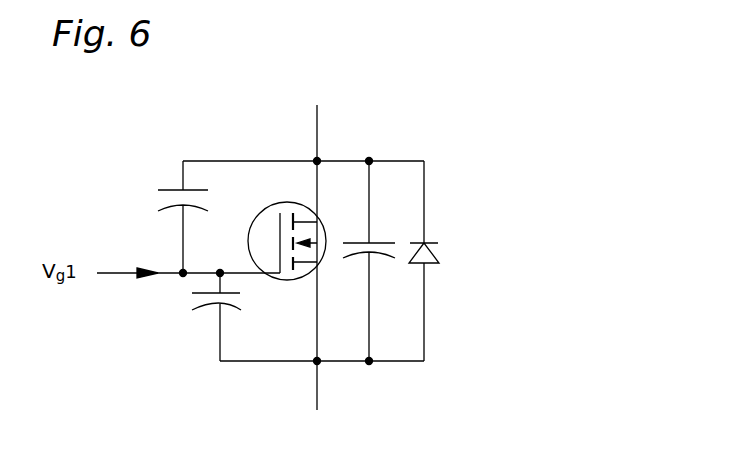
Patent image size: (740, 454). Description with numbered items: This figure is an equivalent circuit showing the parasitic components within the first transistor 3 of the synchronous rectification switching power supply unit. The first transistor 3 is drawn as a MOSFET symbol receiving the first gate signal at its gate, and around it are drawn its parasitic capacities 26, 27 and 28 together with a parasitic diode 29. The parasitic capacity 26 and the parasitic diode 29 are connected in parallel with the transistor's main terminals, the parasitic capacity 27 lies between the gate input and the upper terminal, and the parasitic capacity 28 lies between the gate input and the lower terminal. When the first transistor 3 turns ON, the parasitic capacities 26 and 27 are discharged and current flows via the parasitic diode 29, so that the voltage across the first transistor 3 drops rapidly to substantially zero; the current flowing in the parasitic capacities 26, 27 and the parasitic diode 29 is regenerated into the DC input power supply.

The first transistor 3 is at (448, 180).
The parasitic capacity 26 is at (376, 243).
The parasitic capacity 27 is at (163, 203).
The parasitic capacity 28 is at (207, 303).
The parasitic diode 29 is at (438, 251).